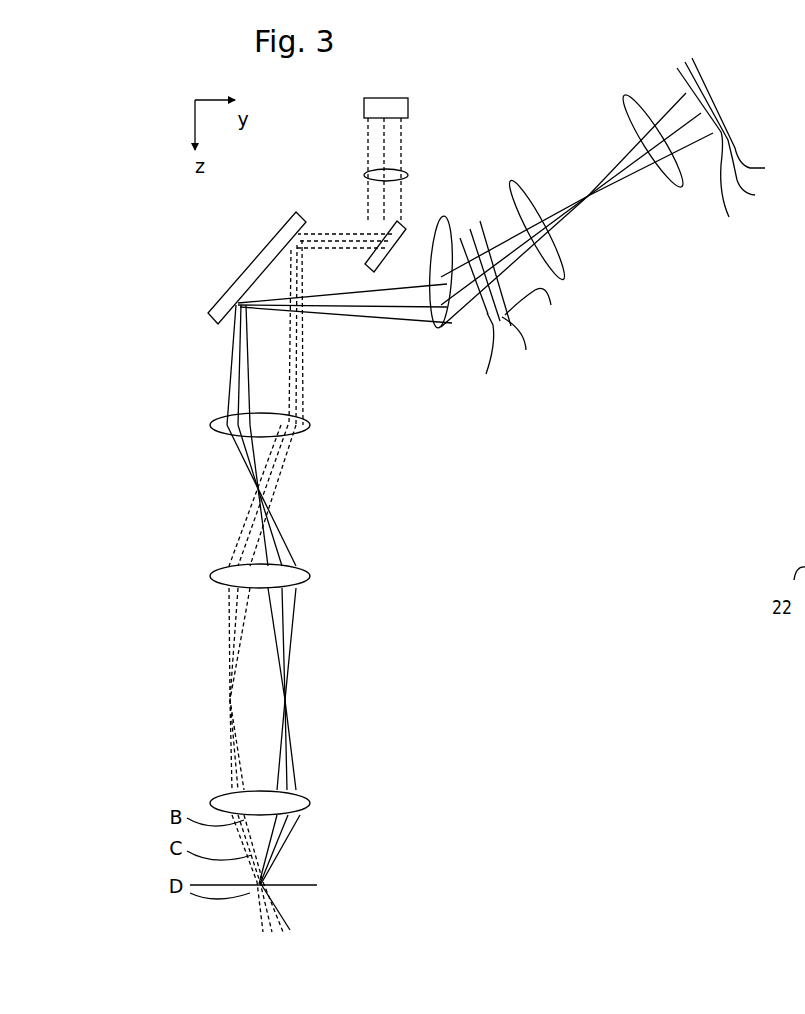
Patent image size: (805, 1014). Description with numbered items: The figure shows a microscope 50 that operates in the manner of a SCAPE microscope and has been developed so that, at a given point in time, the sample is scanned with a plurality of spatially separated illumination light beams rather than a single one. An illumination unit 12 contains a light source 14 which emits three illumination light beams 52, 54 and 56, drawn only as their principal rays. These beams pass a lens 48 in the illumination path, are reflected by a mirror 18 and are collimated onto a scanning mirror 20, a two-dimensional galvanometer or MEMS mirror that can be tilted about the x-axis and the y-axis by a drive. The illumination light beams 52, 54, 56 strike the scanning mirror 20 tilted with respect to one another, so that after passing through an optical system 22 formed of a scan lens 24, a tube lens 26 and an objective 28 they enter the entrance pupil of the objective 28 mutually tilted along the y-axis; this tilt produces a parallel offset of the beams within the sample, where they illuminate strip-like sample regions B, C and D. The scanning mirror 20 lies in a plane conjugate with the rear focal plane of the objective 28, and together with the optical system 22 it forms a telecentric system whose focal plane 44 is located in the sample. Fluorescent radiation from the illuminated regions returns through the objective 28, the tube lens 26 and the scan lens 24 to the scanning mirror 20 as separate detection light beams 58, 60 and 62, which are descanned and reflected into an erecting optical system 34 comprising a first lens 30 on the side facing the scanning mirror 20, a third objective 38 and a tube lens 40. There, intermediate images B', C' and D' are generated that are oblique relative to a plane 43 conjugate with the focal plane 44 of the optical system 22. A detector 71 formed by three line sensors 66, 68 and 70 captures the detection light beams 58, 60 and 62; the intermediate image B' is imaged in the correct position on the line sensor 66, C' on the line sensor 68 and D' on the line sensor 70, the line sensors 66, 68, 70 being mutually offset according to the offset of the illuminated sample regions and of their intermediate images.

The illumination unit 12 is at (311, 144).
The light source 14 is at (413, 138).
The mirror 18 is at (369, 273).
The scanning mirror 20 is at (214, 308).
The optical system 22 is at (250, 586).
The scan lens 24 is at (308, 432).
The tube lens 26 is at (306, 590).
The objective 28 is at (292, 805).
The lens 30 is at (440, 330).
The erecting optical system 34 is at (515, 238).
The third objective 38 is at (560, 265).
The tube lens 40 is at (682, 187).
The plane 43 is at (488, 224).
The focal plane 44 is at (317, 885).
The collimating lens 48 is at (408, 179).
The microscope 50 is at (385, 747).
The illumination light beam 52 is at (408, 137).
The illumination light beam 54 is at (397, 156).
The illumination light beam 56 is at (364, 138).
The detection light beam 58 is at (277, 878).
The detection light beam 60 is at (290, 846).
The detection light beam 62 is at (288, 833).
The line sensor 66 is at (742, 118).
The line sensor 68 is at (733, 134).
The line sensor 70 is at (712, 154).
The detector 71 is at (727, 132).